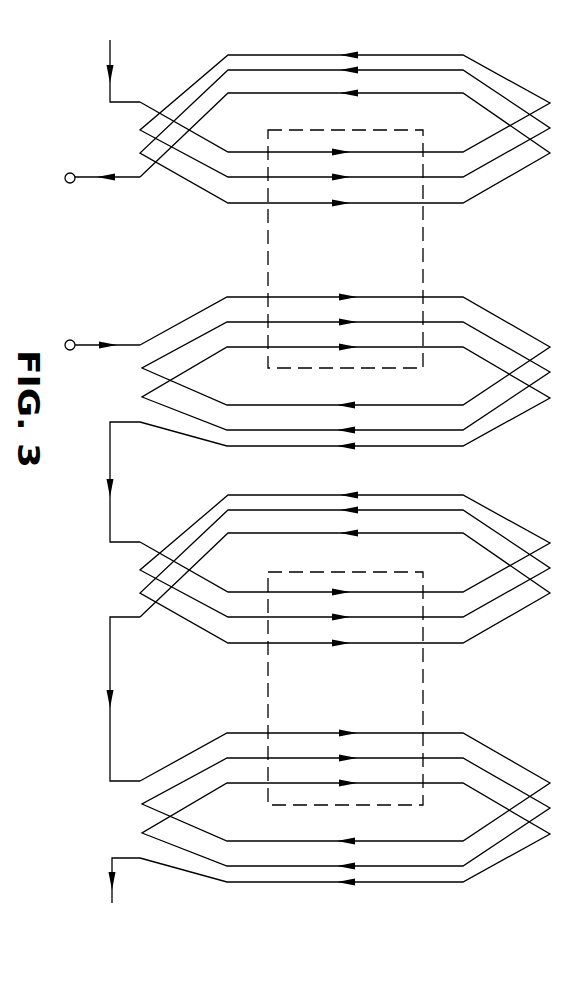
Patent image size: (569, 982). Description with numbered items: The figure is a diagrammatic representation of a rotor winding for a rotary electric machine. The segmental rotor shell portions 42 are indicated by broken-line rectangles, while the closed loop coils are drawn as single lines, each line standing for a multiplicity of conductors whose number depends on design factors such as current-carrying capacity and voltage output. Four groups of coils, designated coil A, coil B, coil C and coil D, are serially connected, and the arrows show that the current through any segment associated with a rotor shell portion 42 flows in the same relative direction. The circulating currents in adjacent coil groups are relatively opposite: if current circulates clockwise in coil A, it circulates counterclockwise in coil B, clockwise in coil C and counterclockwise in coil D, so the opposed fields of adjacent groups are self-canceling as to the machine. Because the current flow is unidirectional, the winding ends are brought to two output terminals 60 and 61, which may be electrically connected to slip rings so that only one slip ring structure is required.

The segmental rotor shell portion 42 is at (423, 247).
The output terminal 60 is at (66, 182).
The output terminal 61 is at (66, 341).
The coil A is at (503, 438).
The coil B is at (505, 634).
The coil C is at (503, 874).
The coil D is at (505, 193).